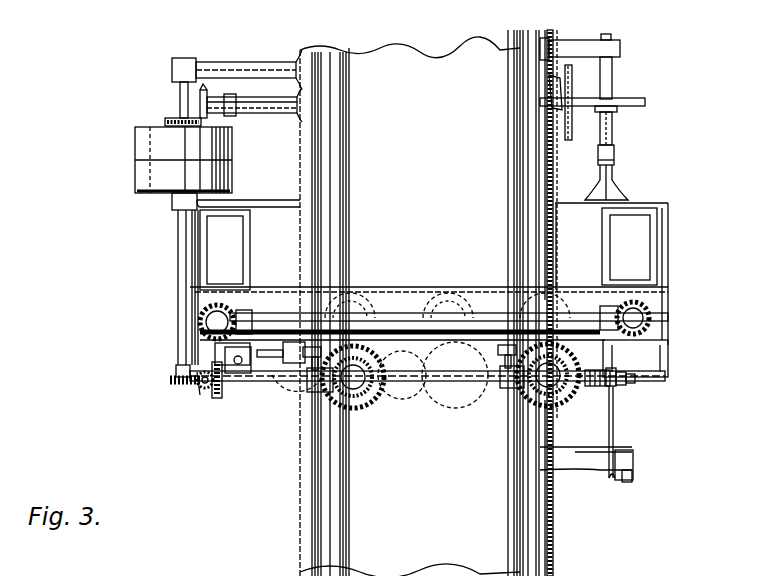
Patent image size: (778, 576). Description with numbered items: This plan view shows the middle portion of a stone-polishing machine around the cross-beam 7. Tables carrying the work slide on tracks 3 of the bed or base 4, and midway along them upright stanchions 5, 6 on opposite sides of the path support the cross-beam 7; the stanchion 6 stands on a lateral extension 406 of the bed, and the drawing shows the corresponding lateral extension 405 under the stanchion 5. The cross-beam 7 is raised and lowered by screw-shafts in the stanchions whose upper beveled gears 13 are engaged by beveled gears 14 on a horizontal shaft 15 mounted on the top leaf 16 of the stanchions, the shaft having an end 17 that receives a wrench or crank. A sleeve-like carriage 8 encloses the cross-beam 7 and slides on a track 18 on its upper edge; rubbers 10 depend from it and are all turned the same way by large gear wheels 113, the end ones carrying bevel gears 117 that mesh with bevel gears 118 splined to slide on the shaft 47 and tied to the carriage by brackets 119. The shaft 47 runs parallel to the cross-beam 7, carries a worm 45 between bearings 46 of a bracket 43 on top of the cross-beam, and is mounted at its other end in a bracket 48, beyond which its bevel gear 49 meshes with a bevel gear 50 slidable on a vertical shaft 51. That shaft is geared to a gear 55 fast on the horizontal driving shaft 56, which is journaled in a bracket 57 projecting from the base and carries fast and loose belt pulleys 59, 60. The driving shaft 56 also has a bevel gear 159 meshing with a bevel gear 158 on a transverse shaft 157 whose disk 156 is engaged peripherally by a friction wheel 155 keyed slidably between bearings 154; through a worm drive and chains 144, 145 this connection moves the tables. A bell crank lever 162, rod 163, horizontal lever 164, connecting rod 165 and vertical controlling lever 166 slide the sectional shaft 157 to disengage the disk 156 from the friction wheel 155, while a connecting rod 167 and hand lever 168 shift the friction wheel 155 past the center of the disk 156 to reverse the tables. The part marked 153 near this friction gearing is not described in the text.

The track 3 is at (518, 115).
The bed or base 4 is at (396, 550).
The stanchion 5 is at (225, 250).
The stanchion 6 is at (629, 246).
The cross-beam 7 is at (250, 378).
The carriage 8 is at (293, 344).
The rubber 10 is at (402, 400).
The beveled gear 13 is at (215, 323).
The beveled gear 14 is at (617, 318).
The horizontal shaft 15 is at (481, 322).
The top leaf 16 is at (390, 296).
The shaft end 17 is at (673, 318).
The track 18 is at (277, 372).
The bracket 43 is at (668, 356).
The worm 45 is at (625, 388).
The bearing 46 is at (665, 380).
The shaft 47 is at (444, 392).
The bracket 48 is at (222, 356).
The bevel gear 49 is at (215, 400).
The bevel gear 50 is at (202, 392).
The vertical shaft 51 is at (198, 386).
The gear 55 is at (168, 379).
The horizontal driving shaft 56 is at (183, 288).
The bracket 57 is at (241, 66).
The fast belt pulley 59 is at (140, 153).
The loose belt pulley 60 is at (140, 180).
The large gear wheel 113 is at (356, 410).
The bevel gear 117 is at (345, 397).
The bevel gear 118 is at (540, 370).
The bracket 119 is at (312, 392).
The chain 144 is at (558, 549).
The chain 145 is at (555, 188).
The collar 153 is at (618, 156).
The bearing 154 is at (622, 51).
The friction wheel 155 is at (645, 101).
The disk 156 is at (568, 134).
The shaft 157 is at (257, 108).
The bevel gear 158 is at (208, 96).
The bevel gear 159 is at (172, 118).
The bell crank lever 162 is at (558, 82).
The rod 163 is at (545, 212).
The horizontal lever 164 is at (618, 451).
The connecting rod 165 is at (634, 466).
The vertical controlling lever 166 is at (630, 482).
The connecting rod 167 is at (625, 181).
The hand lever 168 is at (614, 480).
The frame bracket 405 is at (243, 119).
The lateral extension 406 is at (611, 274).